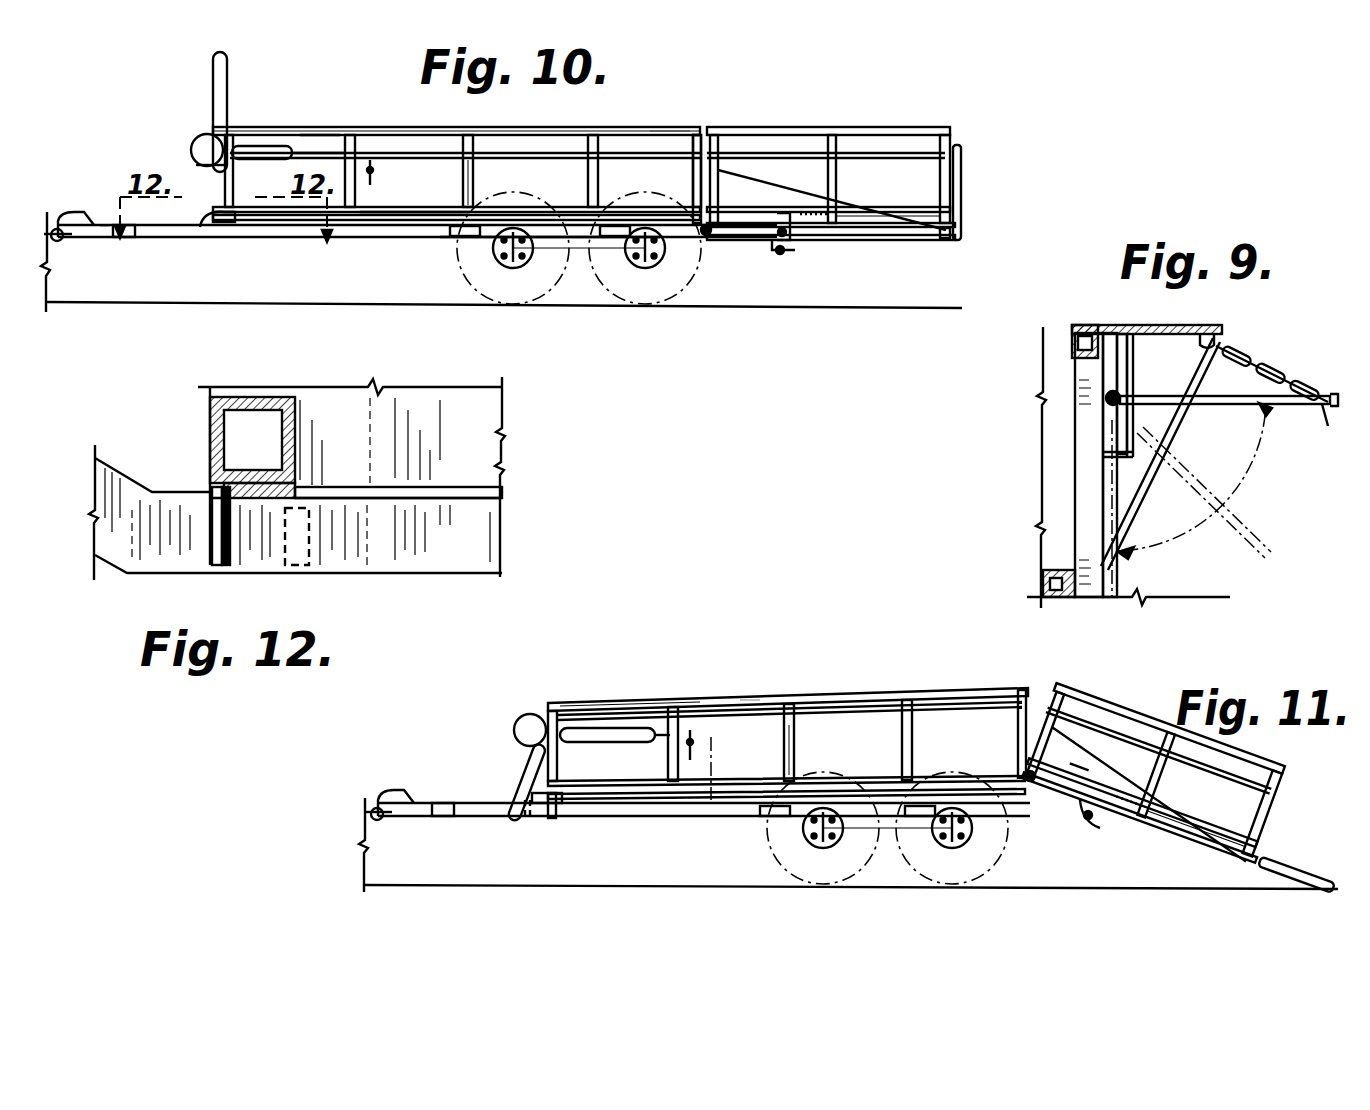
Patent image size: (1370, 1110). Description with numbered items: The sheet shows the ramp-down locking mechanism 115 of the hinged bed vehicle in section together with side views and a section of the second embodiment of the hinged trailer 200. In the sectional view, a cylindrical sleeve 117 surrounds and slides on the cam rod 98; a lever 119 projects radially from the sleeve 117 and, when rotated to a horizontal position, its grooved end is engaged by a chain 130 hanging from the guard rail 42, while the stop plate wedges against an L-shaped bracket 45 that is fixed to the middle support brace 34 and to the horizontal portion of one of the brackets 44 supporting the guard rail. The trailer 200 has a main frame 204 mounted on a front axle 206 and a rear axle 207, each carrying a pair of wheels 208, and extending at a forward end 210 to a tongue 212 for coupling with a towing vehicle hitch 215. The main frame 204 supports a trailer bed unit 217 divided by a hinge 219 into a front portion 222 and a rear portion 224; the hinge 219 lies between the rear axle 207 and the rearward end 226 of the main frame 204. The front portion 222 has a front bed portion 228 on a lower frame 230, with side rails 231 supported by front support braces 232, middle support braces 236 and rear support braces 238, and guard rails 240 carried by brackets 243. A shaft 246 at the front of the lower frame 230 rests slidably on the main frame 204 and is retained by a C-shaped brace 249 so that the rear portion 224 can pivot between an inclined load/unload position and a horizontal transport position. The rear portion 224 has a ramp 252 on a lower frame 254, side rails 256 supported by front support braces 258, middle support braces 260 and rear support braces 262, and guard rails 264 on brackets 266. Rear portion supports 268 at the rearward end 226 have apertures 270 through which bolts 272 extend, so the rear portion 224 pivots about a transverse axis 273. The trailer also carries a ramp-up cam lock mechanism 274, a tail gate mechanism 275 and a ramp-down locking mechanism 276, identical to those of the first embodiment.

In FIG. 9, the middle support brace 34 is at (1085, 490).
In FIG. 9, the guard rail 42 is at (1190, 330).
In FIG. 9, the bracket 44 is at (1168, 430).
In FIG. 9, the L-shaped bracket 45 is at (1135, 382).
In FIG. 9, the cam rod 98 is at (1108, 400).
In FIG. 9, the ramp-down locking mechanism 115 is at (1116, 320).
In FIG. 9, the cylindrical sleeve 117 is at (1132, 356).
In FIG. 9, the lever 119 is at (1278, 410).
In FIG. 9, the chain 130 is at (1248, 360).
In FIG. 10, the hinged trailer 200 is at (662, 110).
In FIG. 11, the hinged trailer 200 is at (746, 676).
In FIG. 10, the main frame 204 is at (315, 240).
In FIG. 12, the main frame 204 is at (485, 546).
In FIG. 11, the main frame 204 is at (648, 820).
In FIG. 10, the axle 206 is at (508, 262).
In FIG. 11, the axle 206 is at (822, 845).
In FIG. 10, the rear axle 207 is at (640, 262).
In FIG. 11, the rear axle 207 is at (954, 842).
In FIG. 10, the wheels 208 is at (622, 258).
In FIG. 11, the wheels 208 is at (945, 842).
In FIG. 10, the forward end 210 is at (120, 162).
In FIG. 11, the forward end 210 is at (468, 803).
In FIG. 10, the tongue 212 is at (126, 234).
In FIG. 11, the tongue 212 is at (444, 818).
In FIG. 10, the hitch 215 is at (62, 234).
In FIG. 11, the hitch 215 is at (378, 822).
In FIG. 10, the trailer bed unit 217 is at (322, 104).
In FIG. 10, the hinge 219 is at (706, 238).
In FIG. 11, the hinge 219 is at (1040, 796).
In FIG. 10, the front portion 222 is at (380, 122).
In FIG. 11, the front portion 222 is at (642, 688).
In FIG. 10, the rear portion 224 is at (795, 124).
In FIG. 11, the rear portion 224 is at (1093, 693).
In FIG. 10, the rearward end 226 is at (786, 245).
In FIG. 11, the rearward end 226 is at (1098, 822).
In FIG. 10, the front bed portion 228 is at (415, 212).
In FIG. 10, the lower frame 230 is at (262, 220).
In FIG. 12, the lower frame 230 is at (490, 440).
In FIG. 10, the side rails 231 is at (268, 142).
In FIG. 10, the front support braces 232 is at (206, 222).
In FIG. 12, the front support braces 232 is at (210, 440).
In FIG. 10, the middle support braces 236 is at (458, 236).
In FIG. 11, the middle support braces 236 is at (670, 816).
In FIG. 10, the rear support braces 238 is at (700, 186).
In FIG. 10, the guard rails 240 is at (570, 128).
In FIG. 11, the guard rails 240 is at (612, 700).
In FIG. 10, the brackets 243 is at (475, 178).
In FIG. 11, the brackets 243 is at (798, 762).
In FIG. 12, the shaft 246 is at (215, 568).
In FIG. 11, the shaft 246 is at (545, 820).
In FIG. 12, the C-shaped brace 249 is at (322, 568).
In FIG. 11, the C-shaped brace 249 is at (525, 818).
In FIG. 10, the ramp 252 is at (876, 214).
In FIG. 11, the ramp 252 is at (1236, 830).
In FIG. 10, the lower frame 254 is at (893, 240).
In FIG. 11, the lower frame 254 is at (1210, 848).
In FIG. 10, the side rails 256 is at (774, 178).
In FIG. 11, the side rails 256 is at (1112, 722).
In FIG. 10, the front support braces 258 is at (713, 236).
In FIG. 10, the middle support braces 260 is at (838, 230).
In FIG. 11, the middle support braces 260 is at (1125, 830).
In FIG. 10, the rear support braces 262 is at (950, 232).
In FIG. 10, the guard rails 264 is at (890, 130).
In FIG. 11, the guard rails 264 is at (1270, 780).
In FIG. 10, the brackets 266 is at (718, 160).
In FIG. 11, the brackets 266 is at (1160, 786).
In FIG. 10, the rear portion supports 268 is at (790, 238).
In FIG. 10, the aperture 270 is at (782, 212).
In FIG. 10, the bolts 272 is at (778, 262).
In FIG. 11, the bolts 272 is at (1086, 822).
In FIG. 11, the transverse axis 273 is at (1085, 775).
In FIG. 10, the ramp-up cam lock mechanism 274 is at (206, 116).
In FIG. 11, the ramp-up cam lock mechanism 274 is at (518, 724).
In FIG. 10, the tail gate mechanism 275 is at (968, 184).
In FIG. 11, the tail gate mechanism 275 is at (1292, 864).
In FIG. 10, the ramp-down locking mechanism 276 is at (378, 170).
In FIG. 11, the ramp-down locking mechanism 276 is at (698, 744).